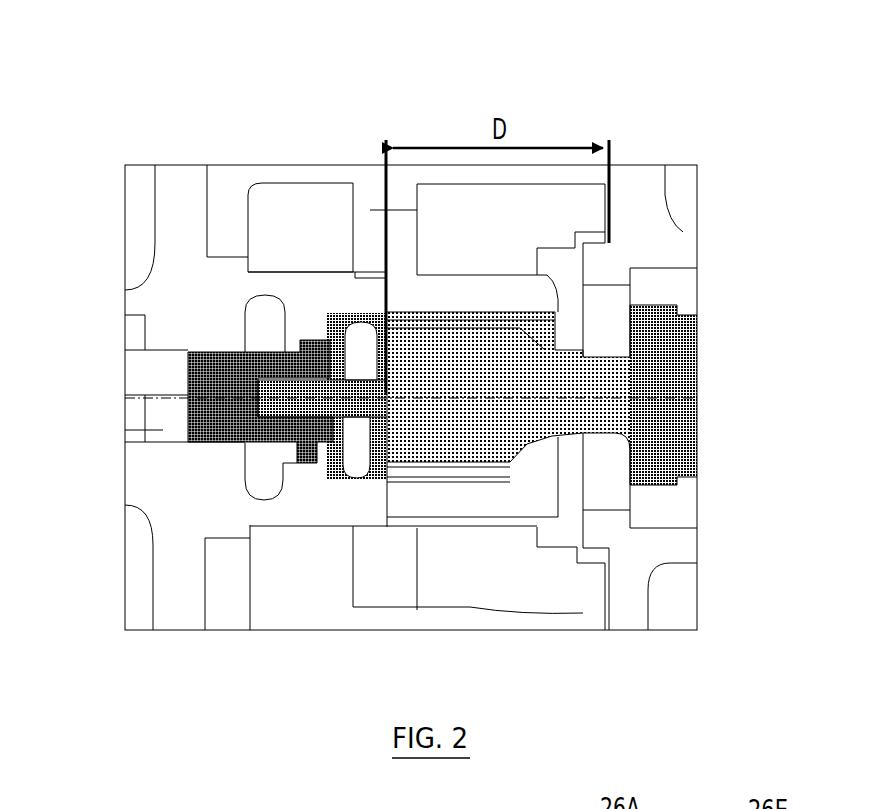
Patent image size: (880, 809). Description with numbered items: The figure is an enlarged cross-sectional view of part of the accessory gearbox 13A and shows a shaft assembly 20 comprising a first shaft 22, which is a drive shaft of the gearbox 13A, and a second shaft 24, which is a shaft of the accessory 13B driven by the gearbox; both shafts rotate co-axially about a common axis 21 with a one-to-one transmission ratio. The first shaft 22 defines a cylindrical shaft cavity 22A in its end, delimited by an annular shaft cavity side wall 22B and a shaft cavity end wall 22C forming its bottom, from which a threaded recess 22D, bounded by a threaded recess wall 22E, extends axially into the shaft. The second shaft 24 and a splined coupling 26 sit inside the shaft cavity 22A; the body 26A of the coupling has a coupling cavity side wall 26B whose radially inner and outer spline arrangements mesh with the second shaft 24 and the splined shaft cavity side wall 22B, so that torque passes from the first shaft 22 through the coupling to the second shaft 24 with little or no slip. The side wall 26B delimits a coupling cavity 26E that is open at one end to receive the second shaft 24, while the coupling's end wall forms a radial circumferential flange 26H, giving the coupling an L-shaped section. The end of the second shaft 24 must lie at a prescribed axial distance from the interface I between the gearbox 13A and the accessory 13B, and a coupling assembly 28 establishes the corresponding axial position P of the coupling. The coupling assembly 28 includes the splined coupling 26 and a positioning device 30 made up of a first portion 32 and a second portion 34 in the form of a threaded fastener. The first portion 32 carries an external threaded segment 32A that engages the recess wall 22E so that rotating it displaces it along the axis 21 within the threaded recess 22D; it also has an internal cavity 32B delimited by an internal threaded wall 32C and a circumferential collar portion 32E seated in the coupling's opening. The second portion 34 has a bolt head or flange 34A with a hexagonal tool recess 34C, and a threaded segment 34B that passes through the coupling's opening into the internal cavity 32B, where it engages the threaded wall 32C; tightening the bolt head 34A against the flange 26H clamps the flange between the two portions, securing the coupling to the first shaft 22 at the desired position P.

The accessory gearbox (AGB) 13A is at (147, 205).
The accessory 13B is at (673, 230).
The shaft assembly 20 is at (370, 263).
The axis 21 is at (660, 392).
The first shaft 22 is at (158, 503).
The shaft cavity 22A is at (262, 477).
The shaft cavity side wall 22B is at (410, 507).
The shaft cavity end wall 22C is at (266, 368).
The threaded recess 22D is at (168, 372).
The recess wall 22E is at (148, 432).
The second shaft 24 is at (502, 457).
The splined coupling 26 is at (537, 487).
The body 26A is at (335, 328).
The coupling cavity side wall 26B is at (513, 477).
The coupling cavity 26E is at (545, 455).
The circumferential flange 26H is at (333, 467).
The coupling assembly 28 is at (312, 472).
The positioning device 30 is at (222, 345).
The first portion 32 is at (225, 417).
The threaded segment 32A is at (250, 396).
The internal cavity 32B is at (253, 407).
The internal threaded wall 32C is at (292, 378).
The collar portion 32E is at (340, 376).
The second portion 34 is at (277, 373).
The circumferential flange (bolt head) 34A is at (363, 365).
The threaded segment 34B is at (297, 407).
The tool recess 34C is at (382, 392).
The axial position P is at (318, 393).
The interface I is at (608, 602).